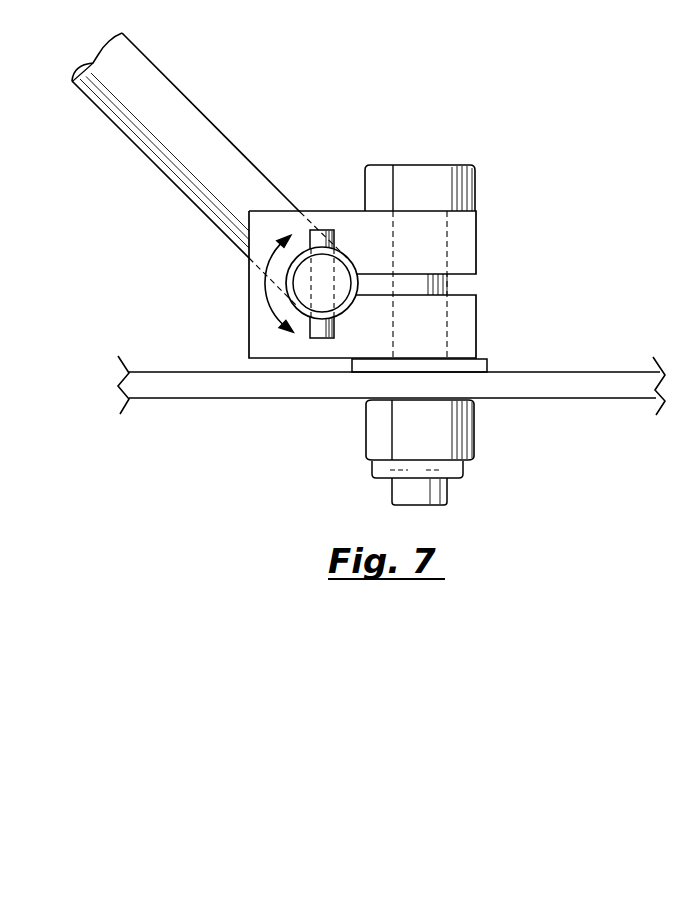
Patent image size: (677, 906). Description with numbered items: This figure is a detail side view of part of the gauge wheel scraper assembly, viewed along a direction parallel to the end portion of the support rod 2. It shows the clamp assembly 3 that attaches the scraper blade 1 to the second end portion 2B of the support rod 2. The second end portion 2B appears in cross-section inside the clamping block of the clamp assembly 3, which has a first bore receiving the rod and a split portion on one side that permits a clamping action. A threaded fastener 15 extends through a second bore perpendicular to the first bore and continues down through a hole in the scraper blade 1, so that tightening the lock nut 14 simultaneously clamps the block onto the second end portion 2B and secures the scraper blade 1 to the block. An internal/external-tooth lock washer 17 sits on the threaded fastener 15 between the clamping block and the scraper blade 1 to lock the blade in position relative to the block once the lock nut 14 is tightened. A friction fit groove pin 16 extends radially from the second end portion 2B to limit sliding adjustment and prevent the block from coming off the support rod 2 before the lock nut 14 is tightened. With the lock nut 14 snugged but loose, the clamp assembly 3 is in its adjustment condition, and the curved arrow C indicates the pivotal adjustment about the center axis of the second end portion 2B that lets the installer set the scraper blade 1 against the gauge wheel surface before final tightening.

The scraper blade 1 is at (563, 385).
The support rod 2 is at (170, 112).
The second end portion of the support rod 2B is at (335, 273).
The clamp assembly 3 is at (463, 247).
The lock nut 14 is at (377, 437).
The threaded fastener 15 is at (435, 486).
The friction fit groove pin 16 is at (323, 247).
The internal/external-tooth lock washer 17 is at (473, 367).
The arrow C is at (266, 285).